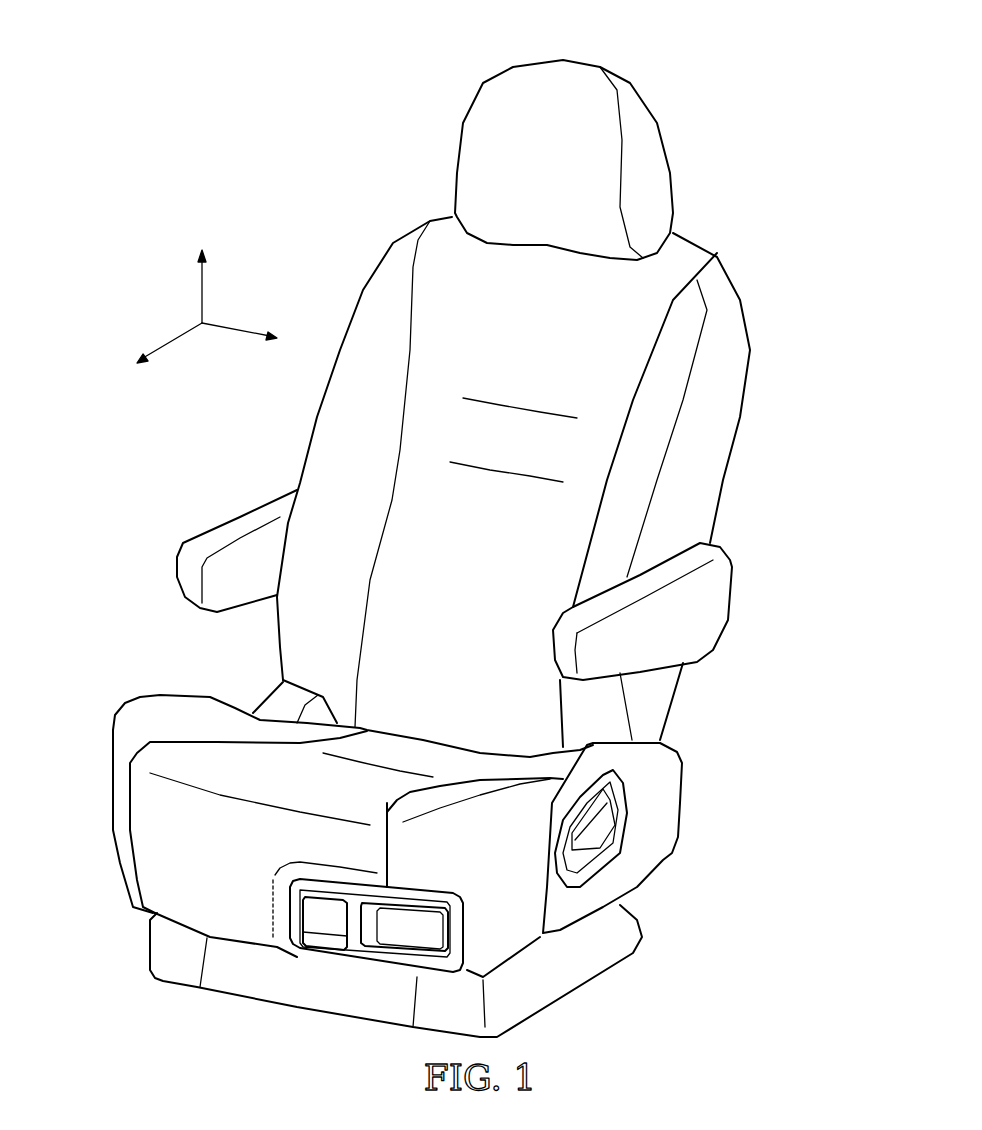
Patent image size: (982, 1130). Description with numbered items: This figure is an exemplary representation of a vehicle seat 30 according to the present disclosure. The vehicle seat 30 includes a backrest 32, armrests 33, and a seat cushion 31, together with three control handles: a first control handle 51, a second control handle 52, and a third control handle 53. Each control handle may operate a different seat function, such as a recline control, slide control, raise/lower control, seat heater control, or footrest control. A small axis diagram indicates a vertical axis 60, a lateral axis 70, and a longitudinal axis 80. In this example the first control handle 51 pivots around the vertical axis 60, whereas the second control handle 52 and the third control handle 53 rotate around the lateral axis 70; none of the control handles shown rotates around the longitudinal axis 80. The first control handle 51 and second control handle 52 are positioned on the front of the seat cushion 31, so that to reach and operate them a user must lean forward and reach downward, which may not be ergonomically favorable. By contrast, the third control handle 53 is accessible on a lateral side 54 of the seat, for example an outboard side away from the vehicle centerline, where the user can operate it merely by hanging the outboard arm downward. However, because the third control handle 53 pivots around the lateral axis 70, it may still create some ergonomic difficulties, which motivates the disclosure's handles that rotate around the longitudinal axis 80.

The vehicle seat 30 is at (770, 67).
The seat cushion 31 is at (115, 780).
The backrest 32 is at (733, 433).
The armrests 33 is at (222, 527).
The first control handle 51 is at (418, 942).
The second control handle 52 is at (338, 927).
The third control handle 53 is at (603, 823).
The lateral side 54 is at (670, 790).
The vertical axis 60 is at (202, 285).
The lateral axis 70 is at (230, 332).
The longitudinal axis 80 is at (178, 337).